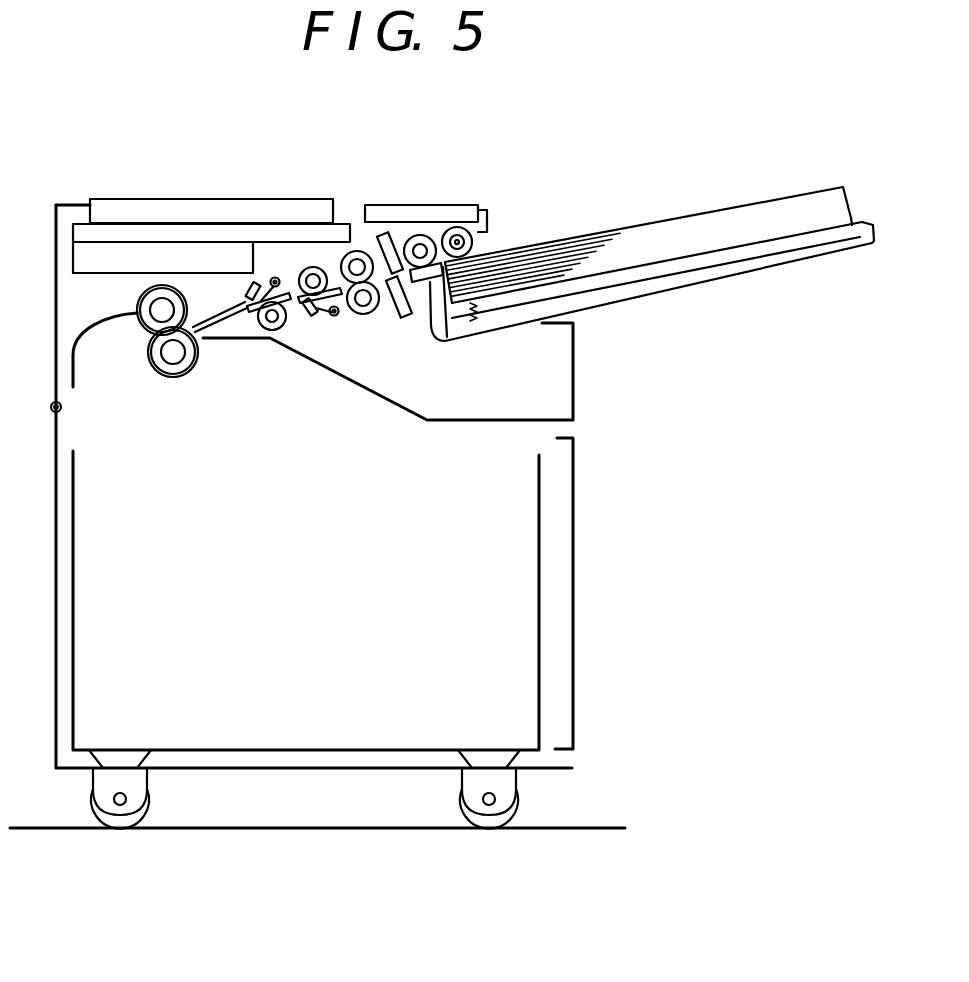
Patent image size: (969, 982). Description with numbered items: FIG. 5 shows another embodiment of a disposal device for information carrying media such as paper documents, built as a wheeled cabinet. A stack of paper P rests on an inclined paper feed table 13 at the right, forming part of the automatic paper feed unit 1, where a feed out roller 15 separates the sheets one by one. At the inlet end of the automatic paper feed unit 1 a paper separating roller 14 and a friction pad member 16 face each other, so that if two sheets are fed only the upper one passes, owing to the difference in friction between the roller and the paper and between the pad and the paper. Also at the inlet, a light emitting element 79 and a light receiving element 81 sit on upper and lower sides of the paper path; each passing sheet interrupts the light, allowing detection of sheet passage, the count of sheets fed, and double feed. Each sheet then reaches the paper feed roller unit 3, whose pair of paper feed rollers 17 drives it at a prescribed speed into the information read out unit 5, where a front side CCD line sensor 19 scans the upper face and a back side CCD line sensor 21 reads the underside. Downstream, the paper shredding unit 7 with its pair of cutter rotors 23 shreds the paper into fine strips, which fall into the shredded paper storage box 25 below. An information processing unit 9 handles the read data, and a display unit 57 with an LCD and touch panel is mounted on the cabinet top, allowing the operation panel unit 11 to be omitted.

The automatic paper feed unit 1 is at (641, 251).
The paper feed roller unit 3 is at (360, 235).
The information read out unit 5 is at (299, 274).
The paper shredding unit 7 is at (180, 388).
The information processing unit 9 is at (145, 258).
The operation panel unit 11 is at (470, 207).
The paper feed table 13 is at (650, 272).
The paper separating roller 14 is at (423, 238).
The feed out roller 15 is at (475, 243).
The friction pad member 16 is at (447, 342).
The paper feed rollers 17 is at (388, 358).
The front side CCD line sensor 19 is at (265, 278).
The back side CCD line sensor 21 is at (320, 318).
The cutter rotors 23 is at (150, 361).
The shredded paper storage box 25 is at (542, 486).
The display unit 57 is at (218, 210).
The light emitting element 79 is at (391, 232).
The light receiving element 81 is at (405, 318).
The paper P is at (594, 231).